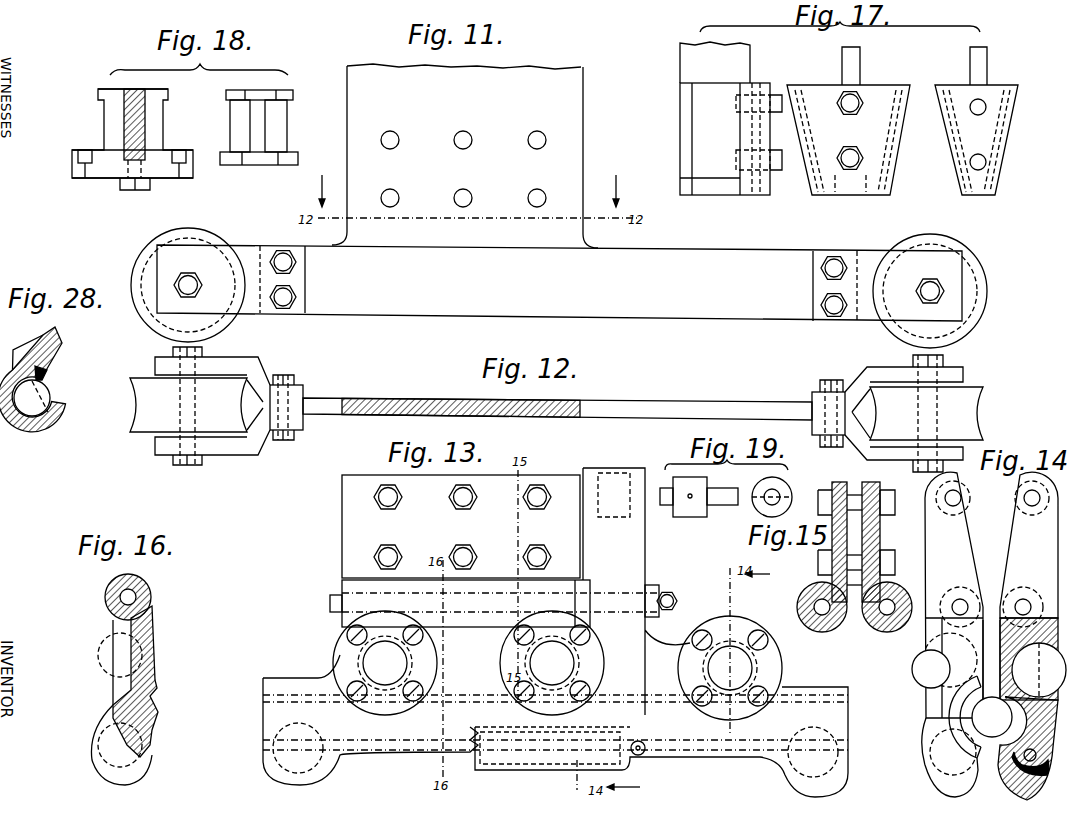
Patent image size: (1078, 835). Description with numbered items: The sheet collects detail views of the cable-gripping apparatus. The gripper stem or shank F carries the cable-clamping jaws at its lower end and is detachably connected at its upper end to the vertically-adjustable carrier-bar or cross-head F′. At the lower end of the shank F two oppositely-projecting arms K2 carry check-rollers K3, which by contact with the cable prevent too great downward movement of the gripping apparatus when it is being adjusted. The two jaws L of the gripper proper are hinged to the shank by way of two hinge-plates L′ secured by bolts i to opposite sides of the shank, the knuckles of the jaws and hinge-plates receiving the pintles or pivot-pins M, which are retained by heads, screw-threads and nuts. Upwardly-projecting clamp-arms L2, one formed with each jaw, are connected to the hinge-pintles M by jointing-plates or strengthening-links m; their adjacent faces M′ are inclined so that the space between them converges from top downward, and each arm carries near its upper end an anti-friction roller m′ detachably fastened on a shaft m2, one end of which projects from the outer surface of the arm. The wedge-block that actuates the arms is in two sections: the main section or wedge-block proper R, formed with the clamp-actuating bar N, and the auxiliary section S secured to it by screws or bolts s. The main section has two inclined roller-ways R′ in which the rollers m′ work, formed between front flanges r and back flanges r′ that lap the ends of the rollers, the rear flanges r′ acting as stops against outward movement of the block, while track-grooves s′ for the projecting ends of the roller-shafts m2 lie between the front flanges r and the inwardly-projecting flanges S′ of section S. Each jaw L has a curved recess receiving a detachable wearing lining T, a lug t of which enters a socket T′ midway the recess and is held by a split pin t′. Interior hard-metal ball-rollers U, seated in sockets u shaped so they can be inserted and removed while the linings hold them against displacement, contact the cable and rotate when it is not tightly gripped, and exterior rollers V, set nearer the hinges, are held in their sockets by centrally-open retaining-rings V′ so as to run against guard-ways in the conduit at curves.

In FIG. 11, the gripper stem or shank F is at (559, 283).
In FIG. 12, the gripper stem or shank F is at (557, 399).
In FIG. 11, the carrier-bar or cross-head F′ is at (465, 156).
In FIG. 11, the oppositely-projecting arms K2 is at (240, 297).
In FIG. 12, the oppositely-projecting arms K2 is at (248, 450).
In FIG. 11, the check-rollers K3 is at (145, 263).
In FIG. 12, the check-rollers K3 is at (240, 400).
In FIG. 18, the clamp-actuating bar N is at (126, 124).
In FIG. 17, the clamp-actuating bar N is at (861, 62).
In FIG. 18, the main section or wedge-block proper R is at (259, 138).
In FIG. 17, the main section or wedge-block proper R is at (864, 152).
In FIG. 18, the inclined track-grooves or roller-ways R′ is at (104, 125).
In FIG. 17, the inclined track-grooves or roller-ways R′ is at (725, 139).
In FIG. 18, the front flanges r is at (140, 90).
In FIG. 18, the back flanges r′ is at (293, 97).
In FIG. 17, the back flanges r′ is at (692, 106).
In FIG. 18, the auxiliary section S is at (160, 192).
In FIG. 17, the auxiliary section S is at (762, 133).
In FIG. 18, the inwardly-projecting flanges S′ is at (193, 160).
In FIG. 17, the inwardly-projecting flanges S′ is at (748, 192).
In FIG. 18, the screws or bolts s is at (135, 183).
In FIG. 17, the screws or bolts s is at (782, 163).
In FIG. 18, the track grooves or ways s′ is at (134, 179).
In FIG. 13, the clamp-jaws L is at (555, 726).
In FIG. 14, the clamp-jaws L is at (935, 725).
In FIG. 16, the clamp-jaws L is at (133, 665).
In FIG. 28, the clamp-jaws L is at (33, 376).
In FIG. 15, the hinge-plates L′ is at (848, 543).
In FIG. 13, the hinge-plates L′ is at (461, 526).
In FIG. 13, the clamp-arms L2 is at (636, 591).
In FIG. 14, the clamp-arms L2 is at (953, 595).
In FIG. 13, the pintles or pivot-pins M is at (330, 602).
In FIG. 14, the inner sides or adjacent faces M′ is at (1024, 586).
In FIG. 15, the jointing-plates or strengthening-links m is at (854, 608).
In FIG. 13, the jointing-plates or strengthening-links m is at (590, 594).
In FIG. 14, the jointing-plates or strengthening-links m is at (991, 607).
In FIG. 19, the anti-friction roller m′ is at (699, 497).
In FIG. 14, the anti-friction roller m′ is at (962, 498).
In FIG. 19, the roller shaft m2 is at (754, 496).
In FIG. 15, the bolt i is at (886, 497).
In FIG. 13, the bolt i is at (477, 557).
In FIG. 14, the securing-lug t is at (1052, 736).
In FIG. 13, the split pin t′ is at (638, 755).
In FIG. 14, the wearing bushings or linings T is at (1050, 762).
In FIG. 14, the socket T′ is at (992, 678).
In FIG. 16, the socket T′ is at (161, 718).
In FIG. 13, the interior anti-friction ball-rollers U is at (856, 748).
In FIG. 16, the interior anti-friction ball-rollers U is at (121, 745).
In FIG. 28, the interior anti-friction ball-rollers U is at (32, 398).
In FIG. 14, the socket u is at (944, 762).
In FIG. 14, the exterior anti-friction rollers V is at (912, 672).
In FIG. 13, the bearing-caps or retaining-rings V′ is at (775, 665).